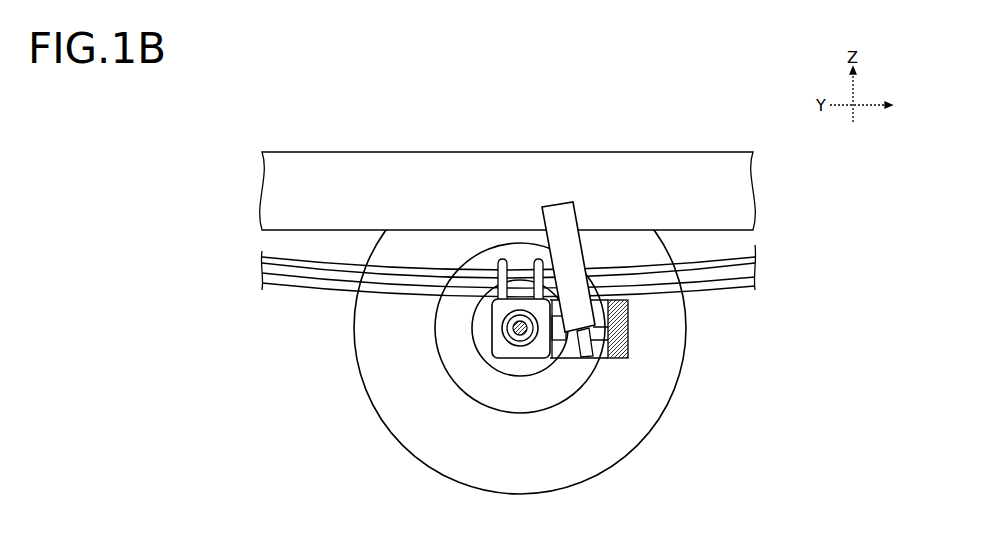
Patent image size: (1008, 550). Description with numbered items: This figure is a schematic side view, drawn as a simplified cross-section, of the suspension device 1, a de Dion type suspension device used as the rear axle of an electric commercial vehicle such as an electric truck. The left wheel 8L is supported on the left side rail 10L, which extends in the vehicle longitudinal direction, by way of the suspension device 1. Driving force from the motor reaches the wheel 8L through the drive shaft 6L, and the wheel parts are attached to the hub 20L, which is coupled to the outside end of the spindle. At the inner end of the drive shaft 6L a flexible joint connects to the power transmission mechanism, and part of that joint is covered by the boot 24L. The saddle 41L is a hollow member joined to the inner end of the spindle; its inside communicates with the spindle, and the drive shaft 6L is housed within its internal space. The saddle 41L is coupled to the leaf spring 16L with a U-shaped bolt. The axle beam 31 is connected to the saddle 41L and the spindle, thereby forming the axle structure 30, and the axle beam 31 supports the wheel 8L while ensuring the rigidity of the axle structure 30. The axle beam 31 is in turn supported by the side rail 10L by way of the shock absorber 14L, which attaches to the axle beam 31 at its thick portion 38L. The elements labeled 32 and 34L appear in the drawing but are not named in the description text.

The suspension device 1 is at (806, 237).
The drive shaft 6L is at (503, 319).
The wheel 8L is at (361, 376).
The side rail 10L is at (690, 152).
The shock absorber 14L is at (577, 212).
The leaf spring 16L is at (757, 270).
The hub 20L is at (492, 344).
The boot 24L is at (503, 329).
The axle structure 30 is at (551, 374).
The axle beam 31 is at (638, 360).
The elastic member 32 is at (629, 335).
The left mounting plate 34L is at (558, 354).
The thick portion 38L is at (602, 358).
The saddle 41L is at (500, 356).